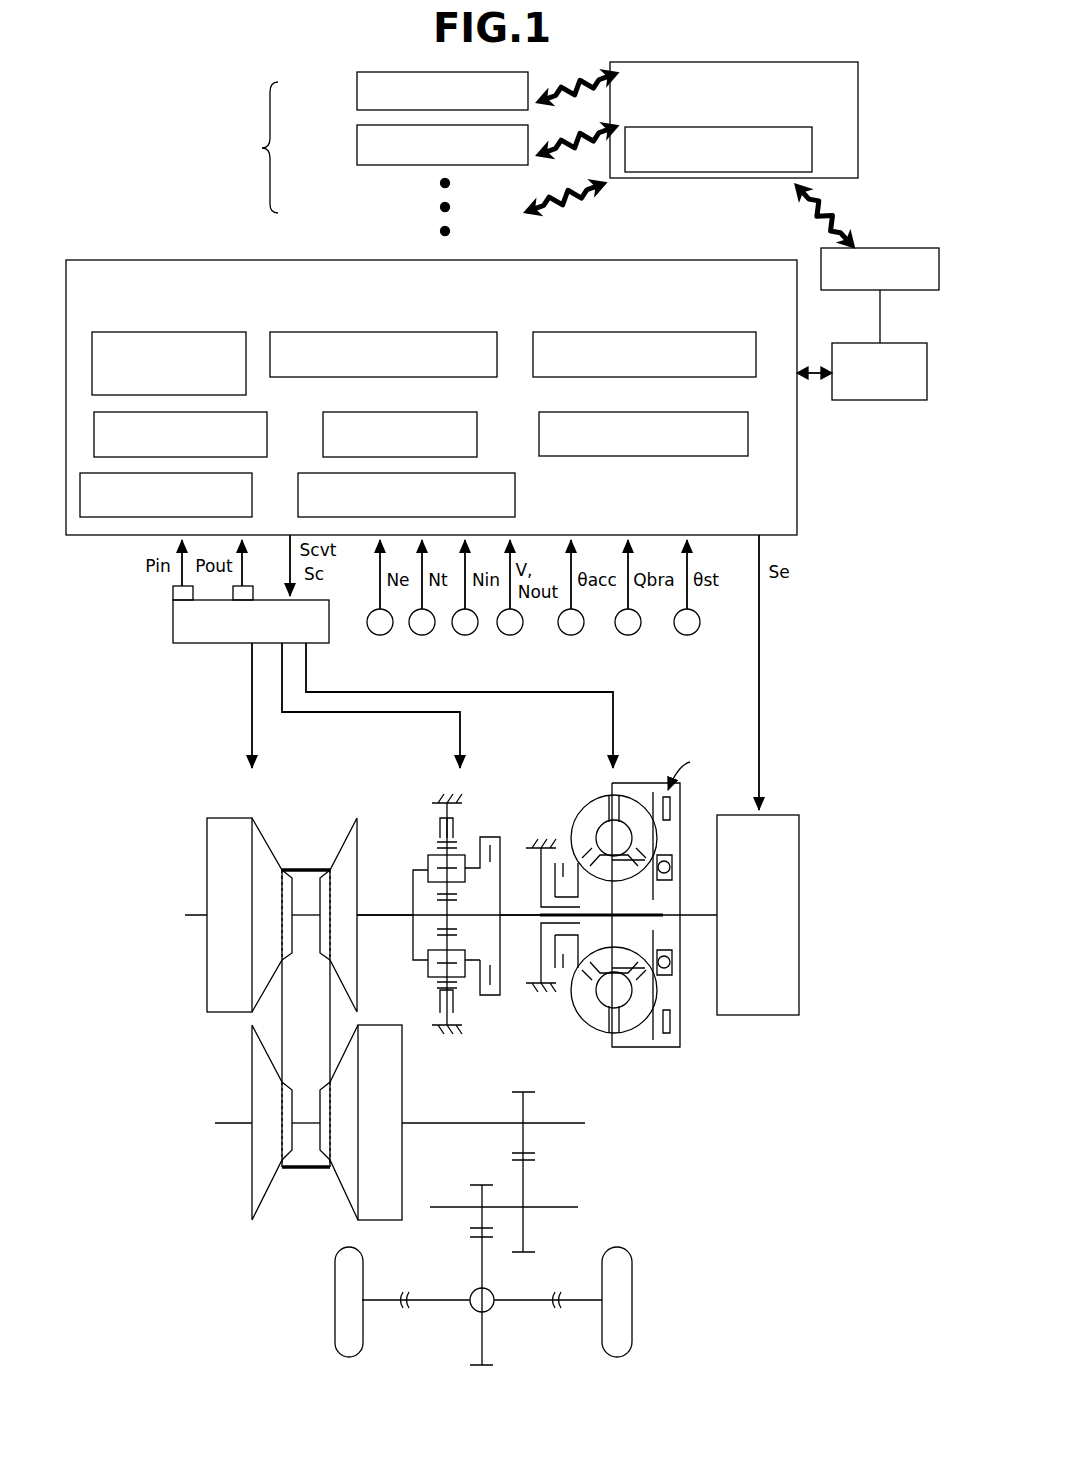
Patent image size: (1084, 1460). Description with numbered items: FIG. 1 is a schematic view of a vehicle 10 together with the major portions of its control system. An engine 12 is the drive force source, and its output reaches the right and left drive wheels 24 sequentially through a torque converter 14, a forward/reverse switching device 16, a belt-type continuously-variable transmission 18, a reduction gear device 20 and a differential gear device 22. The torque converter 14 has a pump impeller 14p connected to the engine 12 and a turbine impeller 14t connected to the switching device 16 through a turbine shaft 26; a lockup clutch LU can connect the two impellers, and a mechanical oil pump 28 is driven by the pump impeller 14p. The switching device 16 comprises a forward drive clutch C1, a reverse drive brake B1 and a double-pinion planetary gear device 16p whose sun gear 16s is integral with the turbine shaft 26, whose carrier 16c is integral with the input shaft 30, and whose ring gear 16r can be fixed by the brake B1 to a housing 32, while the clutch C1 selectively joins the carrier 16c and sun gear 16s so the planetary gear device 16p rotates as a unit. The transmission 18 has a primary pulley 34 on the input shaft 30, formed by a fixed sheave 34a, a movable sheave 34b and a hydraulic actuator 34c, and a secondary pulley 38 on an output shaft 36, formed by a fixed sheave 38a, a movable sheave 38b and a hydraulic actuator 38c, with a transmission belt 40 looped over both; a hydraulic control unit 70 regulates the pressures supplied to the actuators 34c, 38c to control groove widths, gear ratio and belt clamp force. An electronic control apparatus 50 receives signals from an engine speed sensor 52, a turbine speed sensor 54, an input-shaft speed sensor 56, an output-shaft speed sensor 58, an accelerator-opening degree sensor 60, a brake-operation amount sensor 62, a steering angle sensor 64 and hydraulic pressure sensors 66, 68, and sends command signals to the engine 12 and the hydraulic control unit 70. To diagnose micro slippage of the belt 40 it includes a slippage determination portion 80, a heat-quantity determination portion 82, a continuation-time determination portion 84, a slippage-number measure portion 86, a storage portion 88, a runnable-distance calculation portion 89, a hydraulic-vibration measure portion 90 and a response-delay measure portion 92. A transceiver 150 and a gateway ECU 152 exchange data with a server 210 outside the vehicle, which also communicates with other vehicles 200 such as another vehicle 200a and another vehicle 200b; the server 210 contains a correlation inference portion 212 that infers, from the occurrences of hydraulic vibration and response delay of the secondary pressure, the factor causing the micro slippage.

The vehicle 10 is at (812, 698).
The engine 12 is at (775, 1008).
The torque converter 14 is at (620, 895).
The pump impeller 14p is at (590, 1012).
The turbine impeller 14t is at (628, 1025).
The forward/reverse switching device 16 is at (459, 866).
The planetary gear device 16p is at (447, 792).
The carrier 16c is at (428, 862).
The sun gear 16s is at (440, 932).
The ring gear 16r is at (440, 990).
The belt-type continuously-variable transmission 18 is at (285, 1263).
The reduction gear device 20 is at (580, 1180).
The differential gear device 22 is at (476, 1308).
The drive wheels 24 is at (340, 1322).
The turbine shaft 26 is at (513, 918).
The mechanical oil pump 28 is at (562, 862).
The input shaft 30 is at (380, 913).
The housing 32 is at (458, 797).
The primary pulley 34 is at (262, 921).
The fixed sheave 34a is at (350, 850).
The movable sheave 34b is at (263, 850).
The hydraulic actuator 34c is at (215, 837).
The output shaft 36 is at (463, 1128).
The secondary pulley 38 is at (316, 1146).
The fixed sheave 38a is at (262, 1182).
The movable sheave 38b is at (346, 1177).
The hydraulic actuator 38c is at (398, 1105).
The transmission belt 40 is at (308, 868).
The electronic control apparatus 50 is at (748, 270).
The engine speed sensor 52 is at (380, 635).
The turbine speed sensor 54 is at (422, 635).
The input-shaft speed sensor 56 is at (465, 635).
The output-shaft speed sensor 58 is at (510, 635).
The accelerator-opening degree sensor 60 is at (571, 635).
The brake-operation amount sensor 62 is at (628, 635).
The steering angle sensor 64 is at (687, 635).
The hydraulic pressure sensor 66 is at (175, 596).
The hydraulic pressure sensor 68 is at (253, 592).
The hydraulic control unit 70 is at (205, 645).
The slippage determination portion 80 is at (238, 348).
The heat-quantity determination portion 82 is at (493, 350).
The continuation-time determination portion 84 is at (752, 350).
The slippage-number measure portion 86 is at (265, 432).
The storage portion 88 is at (475, 432).
The runnable-distance calculation portion 89 is at (512, 485).
The hydraulic-vibration measure portion 90 is at (745, 434).
The response-delay measure portion 92 is at (250, 508).
The transceiver 150 is at (900, 283).
The gateway ECU 152 is at (858, 344).
The other vehicles 200 is at (337, 159).
The another vehicle 200a is at (357, 92).
The another vehicle 200b is at (357, 146).
The server 210 is at (810, 72).
The correlation inference portion 212 is at (806, 139).
The reverse drive brake B1 is at (426, 825).
The forward drive clutch C1 is at (483, 904).
The lockup clutch LU is at (638, 782).